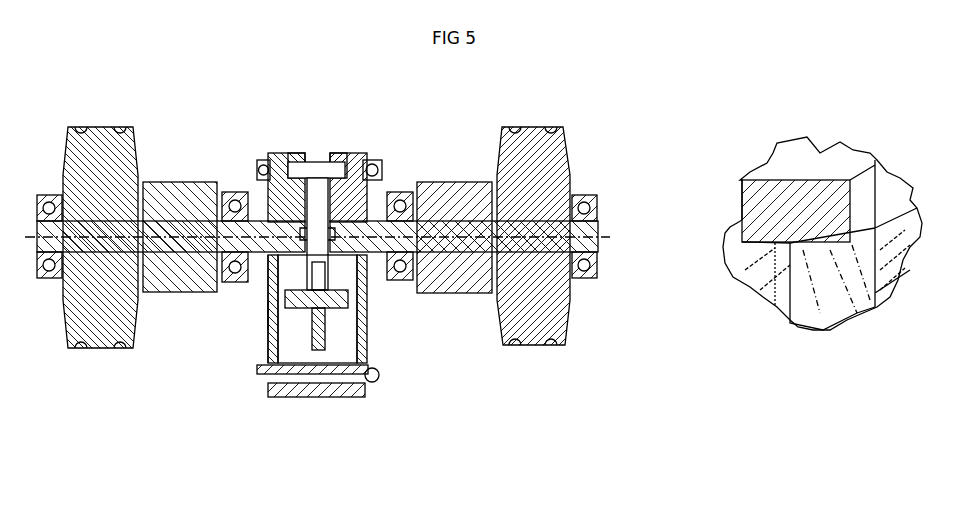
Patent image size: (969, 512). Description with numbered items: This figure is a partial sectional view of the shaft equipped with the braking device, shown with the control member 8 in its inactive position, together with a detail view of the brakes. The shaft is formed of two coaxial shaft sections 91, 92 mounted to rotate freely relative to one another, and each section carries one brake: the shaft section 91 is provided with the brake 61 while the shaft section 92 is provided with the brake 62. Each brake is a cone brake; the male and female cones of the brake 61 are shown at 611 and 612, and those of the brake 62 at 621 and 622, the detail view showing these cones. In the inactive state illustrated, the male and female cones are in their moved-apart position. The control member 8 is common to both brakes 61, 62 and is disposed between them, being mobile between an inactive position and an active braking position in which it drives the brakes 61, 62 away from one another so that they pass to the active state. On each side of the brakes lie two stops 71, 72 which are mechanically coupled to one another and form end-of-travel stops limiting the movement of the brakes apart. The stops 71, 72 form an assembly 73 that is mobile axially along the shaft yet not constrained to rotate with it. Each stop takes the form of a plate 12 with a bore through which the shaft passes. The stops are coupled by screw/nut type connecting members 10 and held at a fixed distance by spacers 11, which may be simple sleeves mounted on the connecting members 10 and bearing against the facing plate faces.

The brake 61 is at (236, 152).
The male cone 611 is at (283, 183).
The female cone 612 is at (290, 165).
The brake 62 is at (602, 229).
The male cone 621 is at (355, 176).
The female cone 622 is at (341, 161).
The shaft section 91 is at (230, 248).
The shaft section 92 is at (485, 248).
The stop 72 is at (360, 340).
The plate 12 is at (363, 323).
The stop 71 is at (272, 340).
The assembly 73 is at (268, 315).
The control member 8 is at (320, 347).
The connecting member 10 is at (342, 383).
The spacer 11 is at (323, 397).